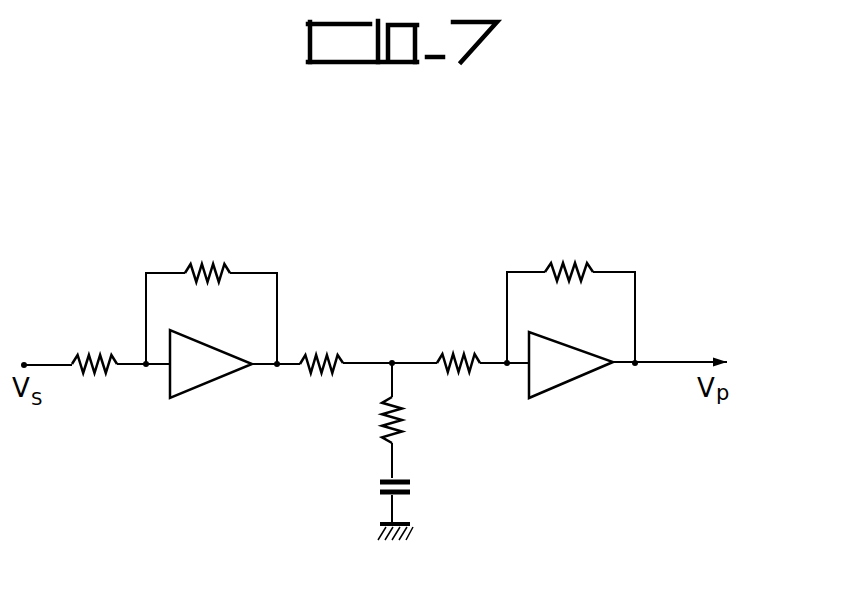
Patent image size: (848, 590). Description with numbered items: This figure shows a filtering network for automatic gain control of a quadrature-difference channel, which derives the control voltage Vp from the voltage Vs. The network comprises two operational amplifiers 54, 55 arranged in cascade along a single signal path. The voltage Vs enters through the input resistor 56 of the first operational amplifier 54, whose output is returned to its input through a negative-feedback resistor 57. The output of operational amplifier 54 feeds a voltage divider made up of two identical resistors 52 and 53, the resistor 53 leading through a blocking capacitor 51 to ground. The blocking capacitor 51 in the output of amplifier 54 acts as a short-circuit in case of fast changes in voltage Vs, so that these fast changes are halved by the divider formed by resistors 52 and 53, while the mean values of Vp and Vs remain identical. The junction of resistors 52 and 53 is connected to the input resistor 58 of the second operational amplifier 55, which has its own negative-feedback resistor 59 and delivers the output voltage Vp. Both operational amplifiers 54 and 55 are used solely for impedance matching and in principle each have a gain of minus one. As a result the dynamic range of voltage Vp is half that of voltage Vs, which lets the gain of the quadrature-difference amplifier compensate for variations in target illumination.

The blocking capacitor 51 is at (404, 480).
The resistor 52 is at (325, 318).
The resistor 53 is at (381, 432).
The operational amplifier 54 is at (218, 378).
The operational amplifier 55 is at (587, 373).
The input resistor 56 is at (95, 353).
The negative-feedback resistor 57 is at (216, 263).
The input resistor 58 is at (465, 318).
The negative-feedback resistor 59 is at (575, 263).